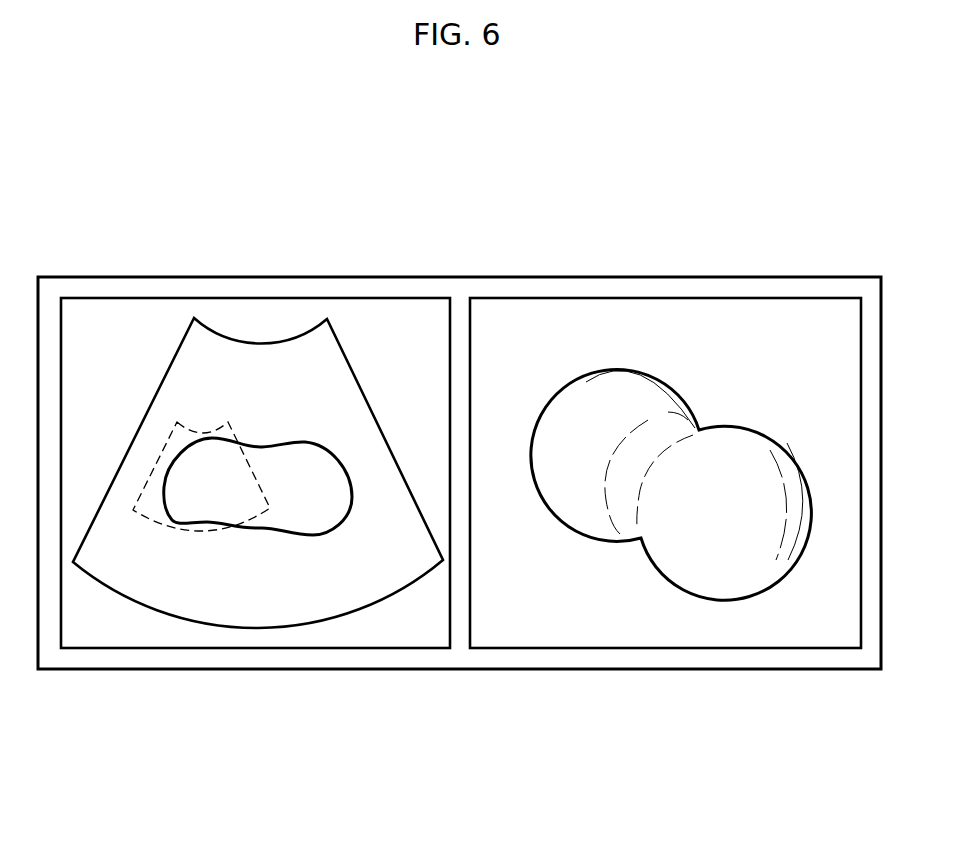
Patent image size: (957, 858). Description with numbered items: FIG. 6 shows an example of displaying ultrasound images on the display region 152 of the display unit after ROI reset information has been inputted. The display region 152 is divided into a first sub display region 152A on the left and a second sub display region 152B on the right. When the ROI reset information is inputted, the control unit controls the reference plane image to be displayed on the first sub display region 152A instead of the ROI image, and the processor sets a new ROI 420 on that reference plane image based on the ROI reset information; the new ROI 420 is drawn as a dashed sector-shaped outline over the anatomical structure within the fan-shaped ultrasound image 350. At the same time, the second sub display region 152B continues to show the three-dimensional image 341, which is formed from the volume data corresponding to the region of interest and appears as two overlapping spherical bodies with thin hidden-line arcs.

The display region 152 is at (457, 278).
The first sub display region 152A is at (252, 648).
The second sub display region 152B is at (673, 648).
The ultrasound image 350 is at (352, 370).
The new ROI 420 is at (233, 434).
The 3D image 341 is at (680, 393).